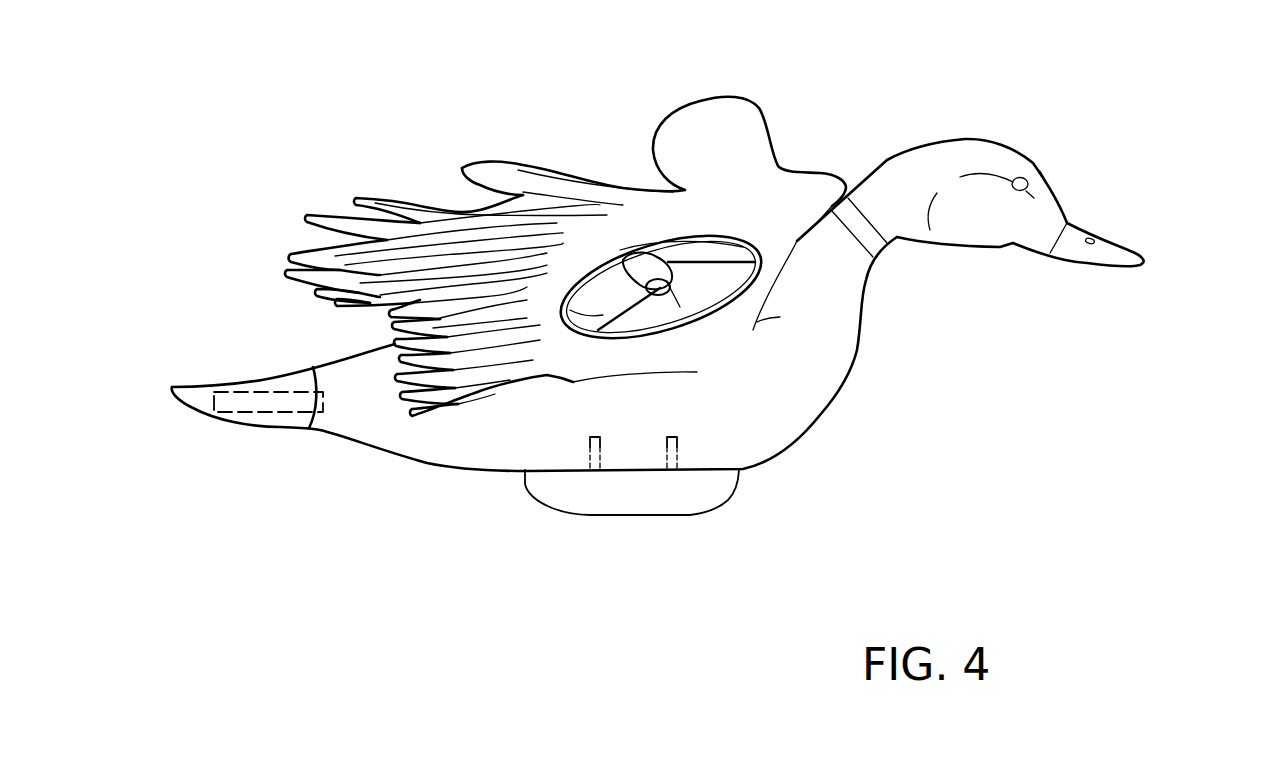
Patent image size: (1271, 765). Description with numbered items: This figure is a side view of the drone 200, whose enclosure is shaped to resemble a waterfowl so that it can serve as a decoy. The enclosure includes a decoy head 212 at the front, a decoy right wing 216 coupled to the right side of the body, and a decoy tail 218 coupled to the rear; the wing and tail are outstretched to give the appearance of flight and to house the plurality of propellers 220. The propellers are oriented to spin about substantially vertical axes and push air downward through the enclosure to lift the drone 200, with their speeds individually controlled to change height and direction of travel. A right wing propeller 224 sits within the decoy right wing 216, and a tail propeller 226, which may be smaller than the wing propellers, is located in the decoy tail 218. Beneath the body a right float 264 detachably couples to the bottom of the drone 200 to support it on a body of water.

The drone 200 is at (1178, 527).
The decoy head 212 is at (992, 155).
The decoy right wing 216 is at (750, 128).
The decoy tail 218 is at (309, 372).
The plurality of propellers 220 is at (673, 293).
The right wing propeller 224 is at (651, 280).
The tail propeller 226 is at (250, 412).
The right float 264 is at (630, 500).